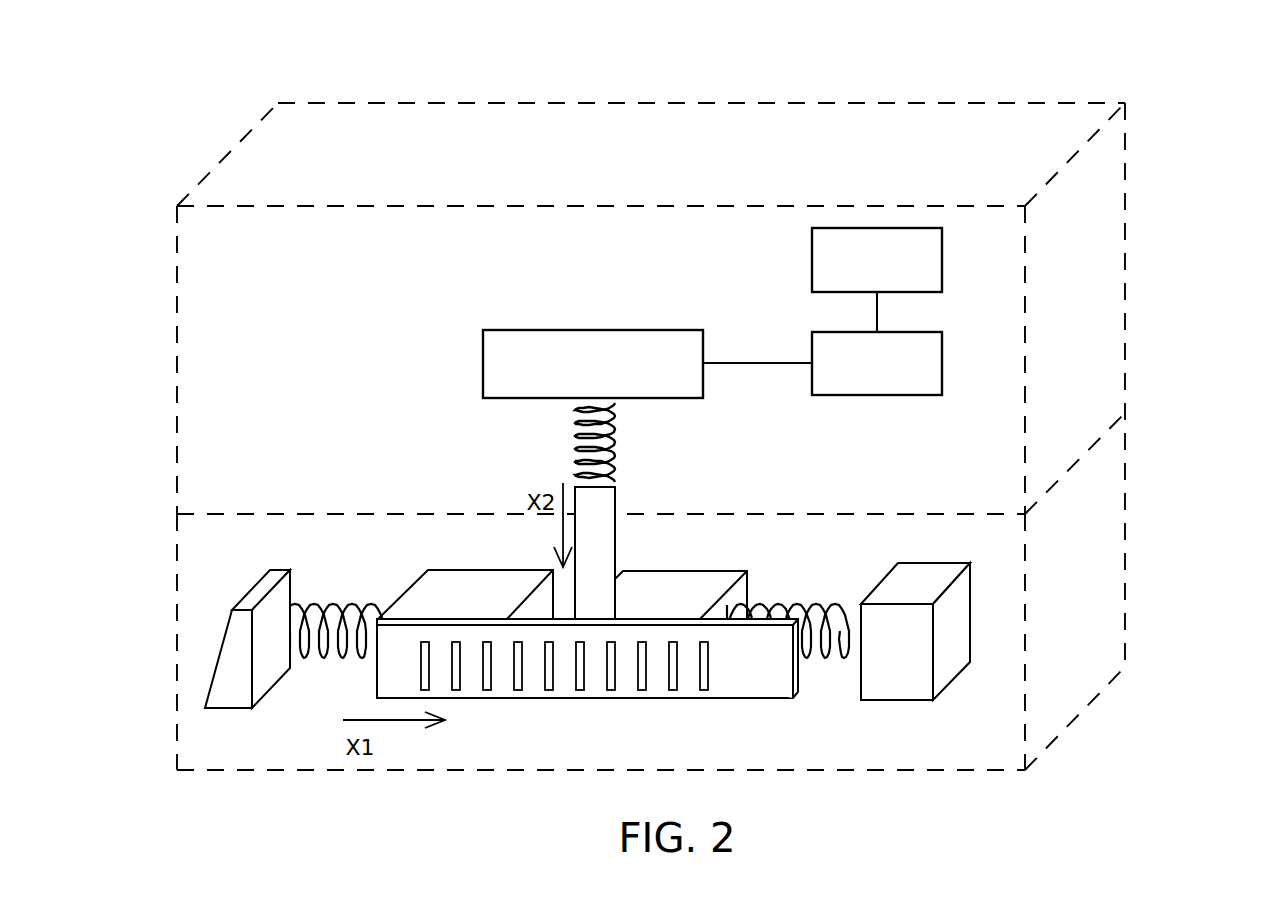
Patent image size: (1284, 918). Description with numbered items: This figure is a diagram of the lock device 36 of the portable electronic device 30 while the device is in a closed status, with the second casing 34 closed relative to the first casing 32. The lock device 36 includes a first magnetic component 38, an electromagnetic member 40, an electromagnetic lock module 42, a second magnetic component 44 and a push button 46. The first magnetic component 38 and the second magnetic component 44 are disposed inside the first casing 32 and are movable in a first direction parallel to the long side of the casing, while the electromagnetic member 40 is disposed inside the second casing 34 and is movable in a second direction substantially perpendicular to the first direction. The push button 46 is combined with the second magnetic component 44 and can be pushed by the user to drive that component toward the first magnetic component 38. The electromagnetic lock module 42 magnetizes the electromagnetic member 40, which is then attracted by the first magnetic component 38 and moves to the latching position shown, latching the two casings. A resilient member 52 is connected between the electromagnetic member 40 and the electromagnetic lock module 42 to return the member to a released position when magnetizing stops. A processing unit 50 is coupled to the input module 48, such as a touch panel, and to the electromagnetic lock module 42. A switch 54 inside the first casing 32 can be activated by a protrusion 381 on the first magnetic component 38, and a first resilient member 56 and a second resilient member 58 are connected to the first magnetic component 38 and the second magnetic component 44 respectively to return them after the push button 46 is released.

The portable electronic device 30 is at (1185, 100).
The first casing 32 is at (176, 580).
The second casing 34 is at (176, 312).
The lock device 36 is at (452, 323).
The first magnetic component 38 is at (670, 585).
The protrusion 381 is at (729, 611).
The electromagnetic member 40 is at (616, 497).
The electromagnetic lock module 42 is at (590, 328).
The second magnetic component 44 is at (475, 585).
The push button 46 is at (746, 688).
The input module 48 is at (944, 258).
The processing unit 50 is at (944, 362).
The resilient member 52 is at (616, 430).
The switch 54 is at (951, 655).
The first resilient member 56 is at (820, 603).
The second resilient member 58 is at (333, 603).